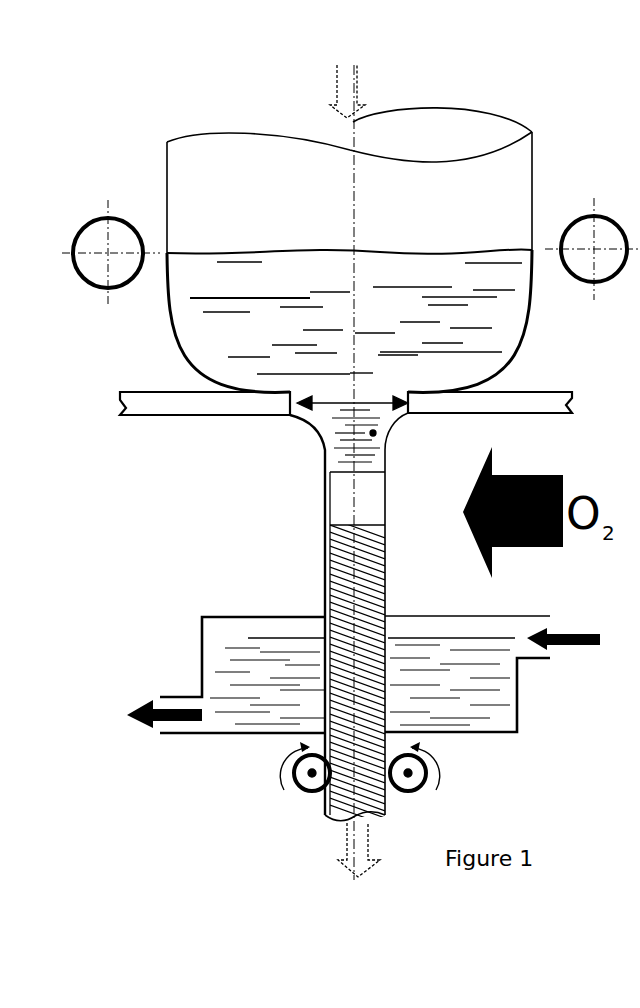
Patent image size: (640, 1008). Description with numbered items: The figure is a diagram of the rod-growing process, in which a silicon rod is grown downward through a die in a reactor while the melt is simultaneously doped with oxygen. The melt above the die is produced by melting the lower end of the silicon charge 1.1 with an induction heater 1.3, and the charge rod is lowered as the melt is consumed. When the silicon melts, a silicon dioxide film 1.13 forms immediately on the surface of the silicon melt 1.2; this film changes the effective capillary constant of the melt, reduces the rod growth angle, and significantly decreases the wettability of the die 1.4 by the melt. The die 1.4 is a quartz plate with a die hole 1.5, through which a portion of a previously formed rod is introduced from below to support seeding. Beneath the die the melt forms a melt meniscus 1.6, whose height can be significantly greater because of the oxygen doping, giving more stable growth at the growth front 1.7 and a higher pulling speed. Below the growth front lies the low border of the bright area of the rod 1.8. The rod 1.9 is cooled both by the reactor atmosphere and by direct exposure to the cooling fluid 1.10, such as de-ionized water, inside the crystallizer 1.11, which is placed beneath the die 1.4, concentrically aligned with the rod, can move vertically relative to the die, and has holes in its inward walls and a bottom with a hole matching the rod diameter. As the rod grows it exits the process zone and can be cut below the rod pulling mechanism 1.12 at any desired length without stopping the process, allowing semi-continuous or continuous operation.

The silicon charge 1.1 is at (520, 163).
The silicon melt 1.2 is at (490, 272).
The induction heater 1.3 is at (128, 220).
The die 1.4 is at (507, 400).
The die hole 1.5 is at (350, 405).
The melt meniscus 1.6 is at (375, 435).
The growth front 1.7 is at (355, 473).
The low border of the bright area of the rod 1.8 is at (362, 528).
The rod 1.9 is at (327, 570).
The cooling fluid 1.10 is at (297, 638).
The crystallizer 1.11 is at (520, 675).
The rod pulling mechanism 1.12 is at (300, 788).
The silicon dioxide film 1.13 is at (173, 310).